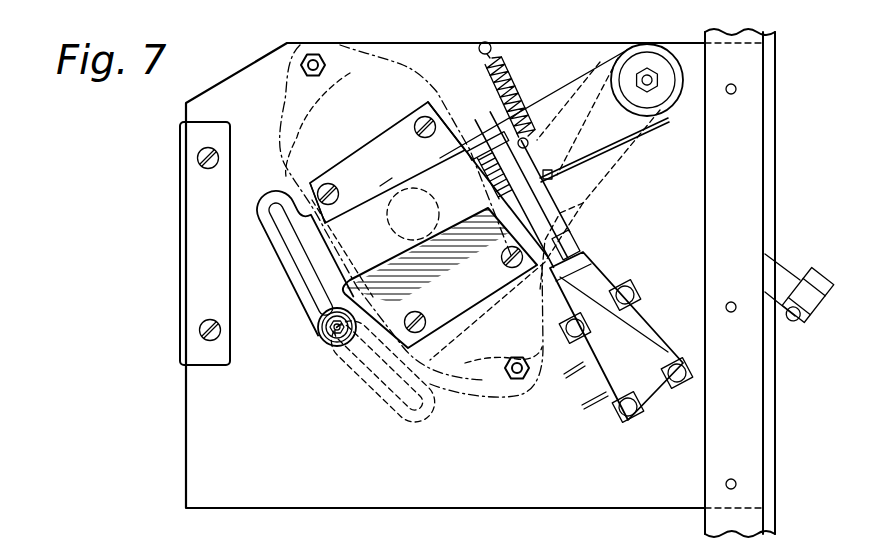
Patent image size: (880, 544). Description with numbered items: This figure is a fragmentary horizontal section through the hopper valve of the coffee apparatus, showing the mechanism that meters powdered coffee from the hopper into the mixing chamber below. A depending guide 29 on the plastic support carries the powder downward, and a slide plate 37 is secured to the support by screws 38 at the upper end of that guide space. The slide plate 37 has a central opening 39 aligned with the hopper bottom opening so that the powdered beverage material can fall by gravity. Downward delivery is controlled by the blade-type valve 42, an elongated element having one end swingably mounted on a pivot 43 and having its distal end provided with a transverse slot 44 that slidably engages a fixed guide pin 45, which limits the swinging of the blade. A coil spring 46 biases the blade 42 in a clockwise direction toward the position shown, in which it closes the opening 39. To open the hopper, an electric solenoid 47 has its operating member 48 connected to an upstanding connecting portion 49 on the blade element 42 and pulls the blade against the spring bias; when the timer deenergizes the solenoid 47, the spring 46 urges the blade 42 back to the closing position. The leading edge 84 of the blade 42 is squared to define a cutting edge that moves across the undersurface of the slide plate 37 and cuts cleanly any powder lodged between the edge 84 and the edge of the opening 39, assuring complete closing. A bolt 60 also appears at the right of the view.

The guide 29 is at (286, 140).
The slide plate 37 is at (398, 130).
The screws 38 is at (322, 190).
The central opening 39 is at (430, 200).
The blade-type valve 42 is at (358, 212).
The pivot 43 is at (647, 92).
The transverse slot 44 is at (303, 275).
The fixed guide pin 45 is at (326, 343).
The coil spring 46 is at (513, 87).
The electric solenoid 47 is at (620, 330).
The operating member 48 is at (542, 180).
The connecting portion 49 is at (502, 128).
The bolt 60 is at (816, 284).
The leading edge 84 is at (389, 192).